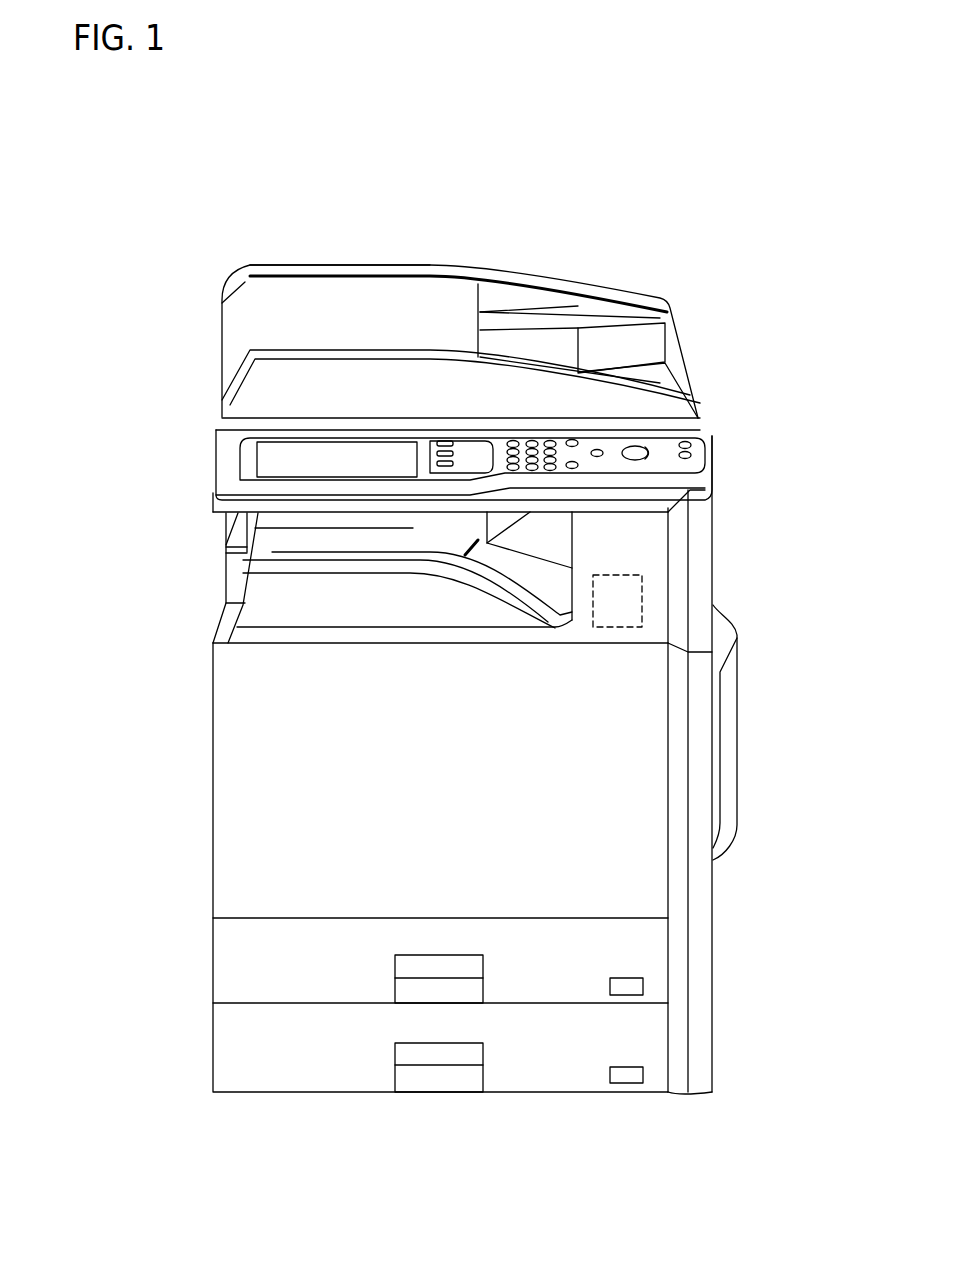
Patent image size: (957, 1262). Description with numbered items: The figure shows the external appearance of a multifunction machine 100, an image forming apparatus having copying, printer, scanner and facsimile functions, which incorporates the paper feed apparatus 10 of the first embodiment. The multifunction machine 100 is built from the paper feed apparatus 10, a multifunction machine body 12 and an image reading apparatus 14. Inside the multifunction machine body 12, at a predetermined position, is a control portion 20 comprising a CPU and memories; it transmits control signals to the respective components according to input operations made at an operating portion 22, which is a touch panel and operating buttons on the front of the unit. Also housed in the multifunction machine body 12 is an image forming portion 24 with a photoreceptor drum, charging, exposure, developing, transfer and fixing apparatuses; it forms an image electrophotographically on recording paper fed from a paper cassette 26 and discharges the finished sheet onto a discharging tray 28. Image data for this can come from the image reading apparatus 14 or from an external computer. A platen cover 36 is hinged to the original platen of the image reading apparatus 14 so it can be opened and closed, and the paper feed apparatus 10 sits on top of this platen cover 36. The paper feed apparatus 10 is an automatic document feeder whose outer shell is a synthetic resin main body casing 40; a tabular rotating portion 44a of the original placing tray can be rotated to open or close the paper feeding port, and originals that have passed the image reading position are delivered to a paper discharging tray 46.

The multifunction machine 100 is at (237, 136).
The paper feed apparatus 10 is at (479, 249).
The multifunction machine body 12 is at (203, 799).
The image reading apparatus 14 is at (717, 434).
The control portion 20 is at (622, 598).
The operating portion 22 is at (264, 463).
The image forming portion 24 is at (245, 728).
The paper cassette 26 is at (248, 958).
The discharging tray 28 is at (285, 543).
The platen cover 36 is at (663, 403).
The main body casing 40 is at (250, 403).
The rotating portion 44a is at (342, 297).
The paper discharging tray 46 is at (547, 346).